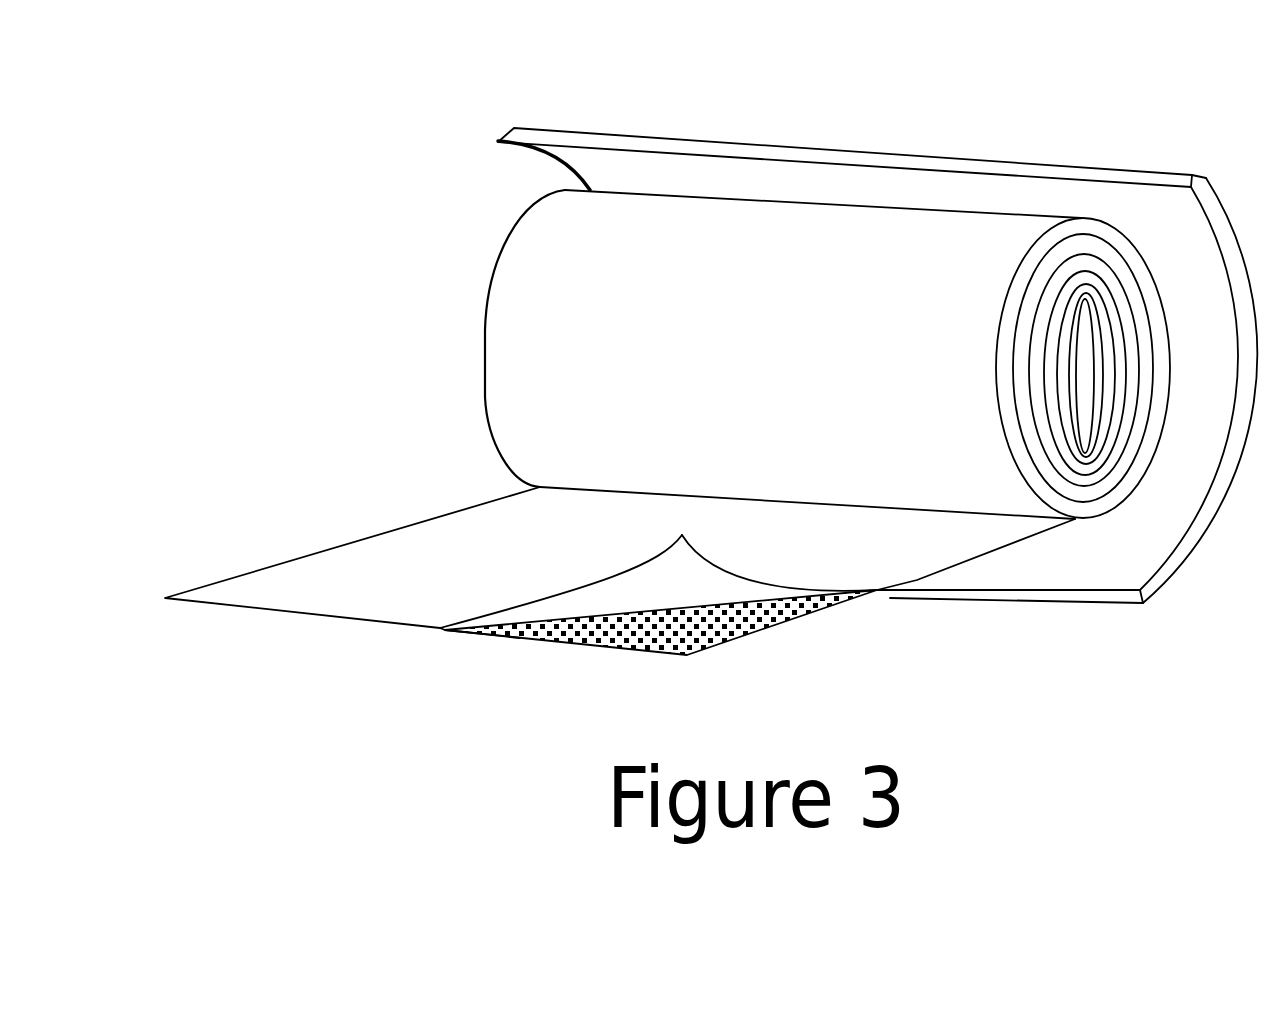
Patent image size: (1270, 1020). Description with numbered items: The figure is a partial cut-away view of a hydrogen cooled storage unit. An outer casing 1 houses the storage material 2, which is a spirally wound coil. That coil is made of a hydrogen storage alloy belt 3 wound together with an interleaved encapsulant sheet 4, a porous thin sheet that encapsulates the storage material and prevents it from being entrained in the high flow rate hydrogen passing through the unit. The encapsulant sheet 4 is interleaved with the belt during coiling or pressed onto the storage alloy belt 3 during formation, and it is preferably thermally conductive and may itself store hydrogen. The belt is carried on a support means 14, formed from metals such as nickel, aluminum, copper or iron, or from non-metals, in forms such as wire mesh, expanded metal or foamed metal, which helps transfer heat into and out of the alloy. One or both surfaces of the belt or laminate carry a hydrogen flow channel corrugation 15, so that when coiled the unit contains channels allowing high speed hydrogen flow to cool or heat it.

The casing 1 is at (914, 142).
The storage material 2 is at (472, 258).
The hydrogen storage alloy belt 3 is at (591, 660).
The encapsulant sheet 4 is at (759, 597).
The support means 14 is at (476, 644).
The hydrogen flow channel corrugation 15 is at (469, 541).